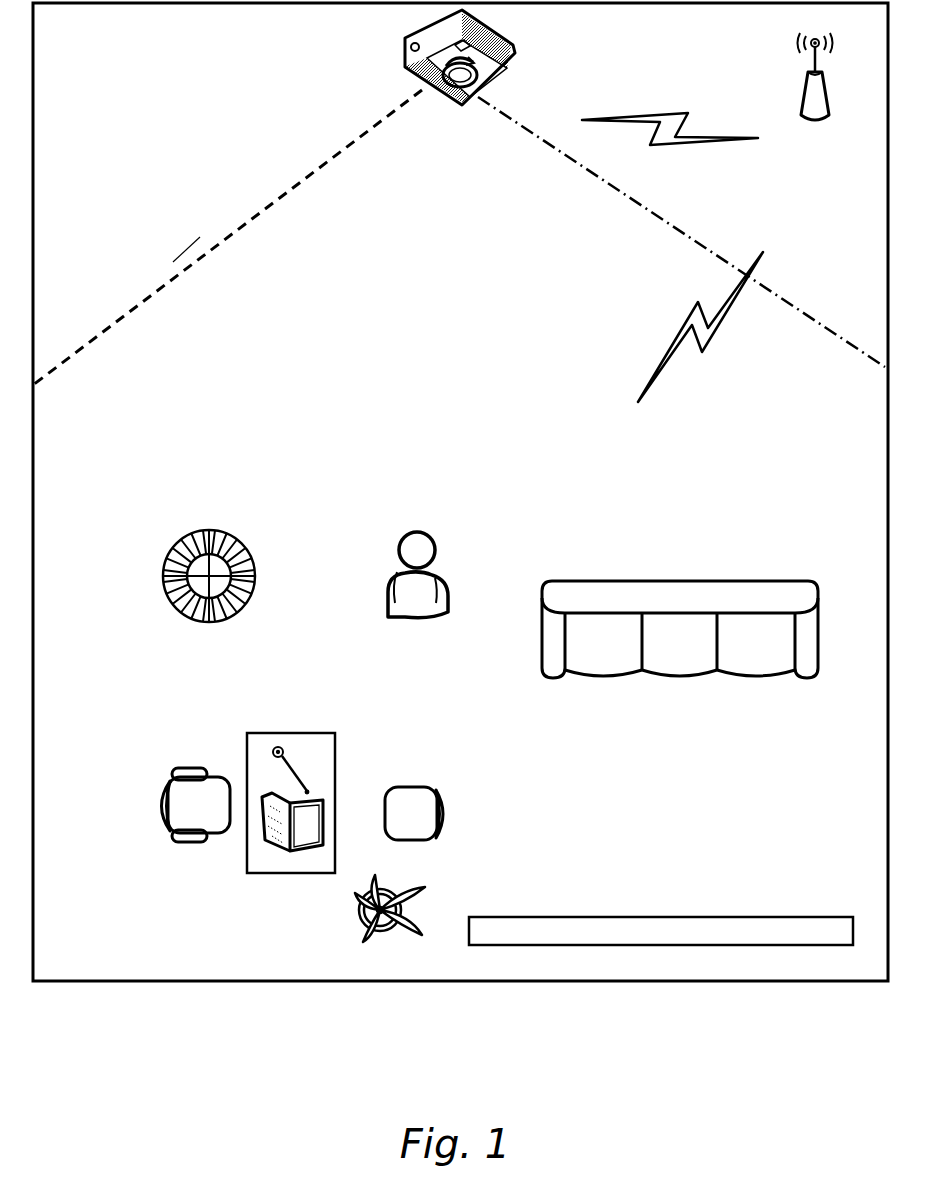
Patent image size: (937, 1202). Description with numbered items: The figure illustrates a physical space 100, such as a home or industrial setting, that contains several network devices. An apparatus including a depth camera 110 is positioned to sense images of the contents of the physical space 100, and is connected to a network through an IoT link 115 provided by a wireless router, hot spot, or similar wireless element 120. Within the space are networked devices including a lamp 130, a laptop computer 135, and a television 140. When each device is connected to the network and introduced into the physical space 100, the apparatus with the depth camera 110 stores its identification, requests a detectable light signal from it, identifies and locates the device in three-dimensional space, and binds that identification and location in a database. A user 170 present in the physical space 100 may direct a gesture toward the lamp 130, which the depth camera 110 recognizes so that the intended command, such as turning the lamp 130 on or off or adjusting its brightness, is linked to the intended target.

The physical space 100 is at (77, 58).
The depth camera 110 is at (400, 42).
The IoT link 115 is at (672, 212).
The wireless element 120 is at (815, 104).
The lamp 130 is at (205, 532).
The laptop computer 135 is at (290, 845).
The television 140 is at (790, 917).
The user 170 is at (400, 543).